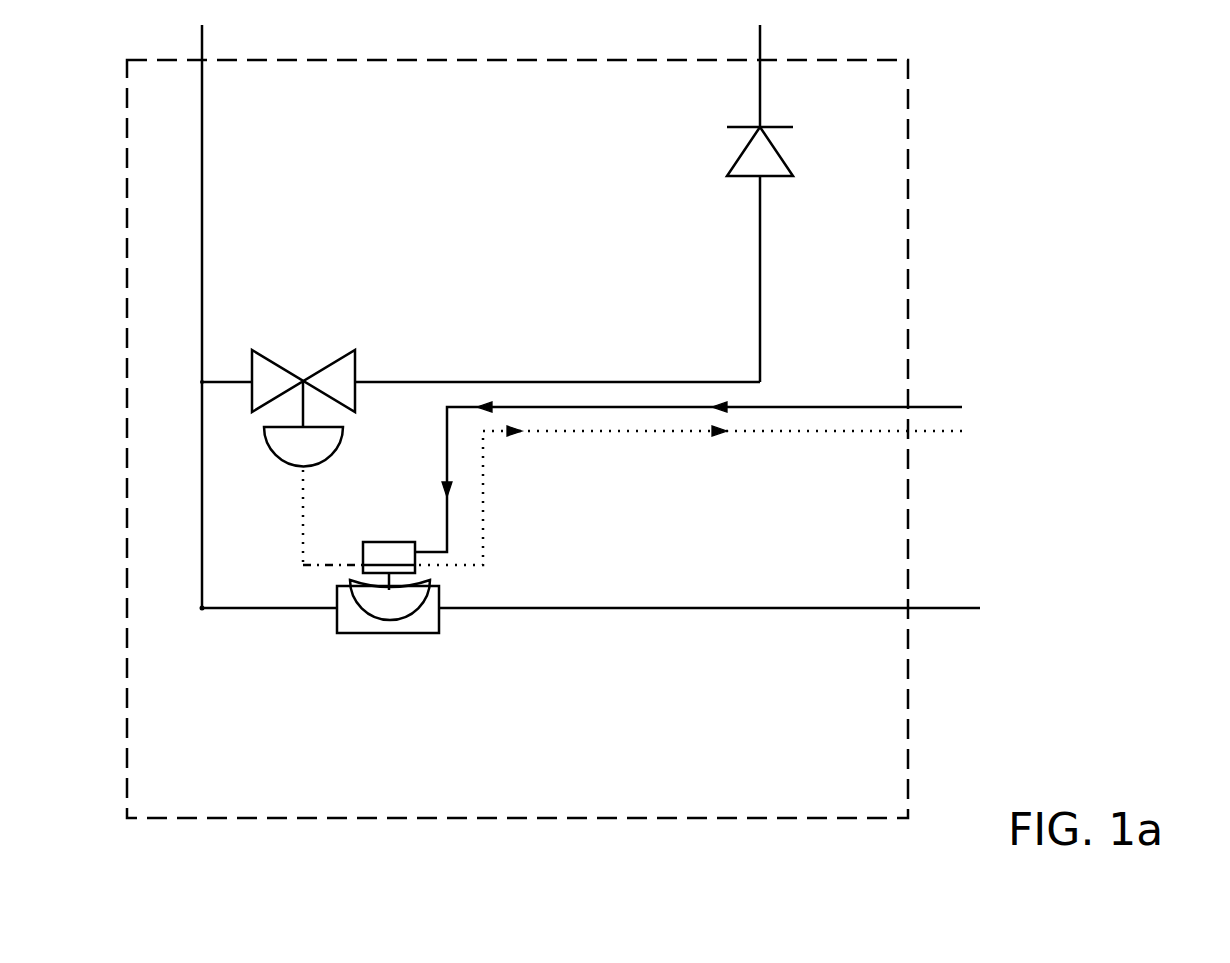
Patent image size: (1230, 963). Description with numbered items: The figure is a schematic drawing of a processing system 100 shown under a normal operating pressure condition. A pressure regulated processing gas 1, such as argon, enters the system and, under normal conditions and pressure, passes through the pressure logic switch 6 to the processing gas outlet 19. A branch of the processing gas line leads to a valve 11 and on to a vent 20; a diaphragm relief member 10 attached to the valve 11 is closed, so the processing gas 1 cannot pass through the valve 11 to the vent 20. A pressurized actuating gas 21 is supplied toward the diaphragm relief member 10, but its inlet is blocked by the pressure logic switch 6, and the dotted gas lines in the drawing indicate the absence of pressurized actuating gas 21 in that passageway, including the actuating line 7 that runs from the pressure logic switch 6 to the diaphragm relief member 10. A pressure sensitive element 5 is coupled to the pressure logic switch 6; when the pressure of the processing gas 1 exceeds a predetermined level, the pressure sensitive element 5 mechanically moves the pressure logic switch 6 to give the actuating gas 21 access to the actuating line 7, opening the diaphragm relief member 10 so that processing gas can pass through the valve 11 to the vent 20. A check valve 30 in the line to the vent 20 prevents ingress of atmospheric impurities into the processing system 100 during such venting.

The processing gas 1 is at (952, 607).
The pressure sensitive element 5 is at (388, 606).
The pressure logic switch 6 is at (397, 548).
The actuating line 7 is at (306, 569).
The diaphragm relief member 10 is at (282, 460).
The valve 11 is at (336, 364).
The processing gas outlet 19 is at (202, 45).
The vent 20 is at (760, 43).
The actuating gas 21 is at (954, 406).
The check valve 30 is at (748, 178).
The processing system 100 is at (878, 265).